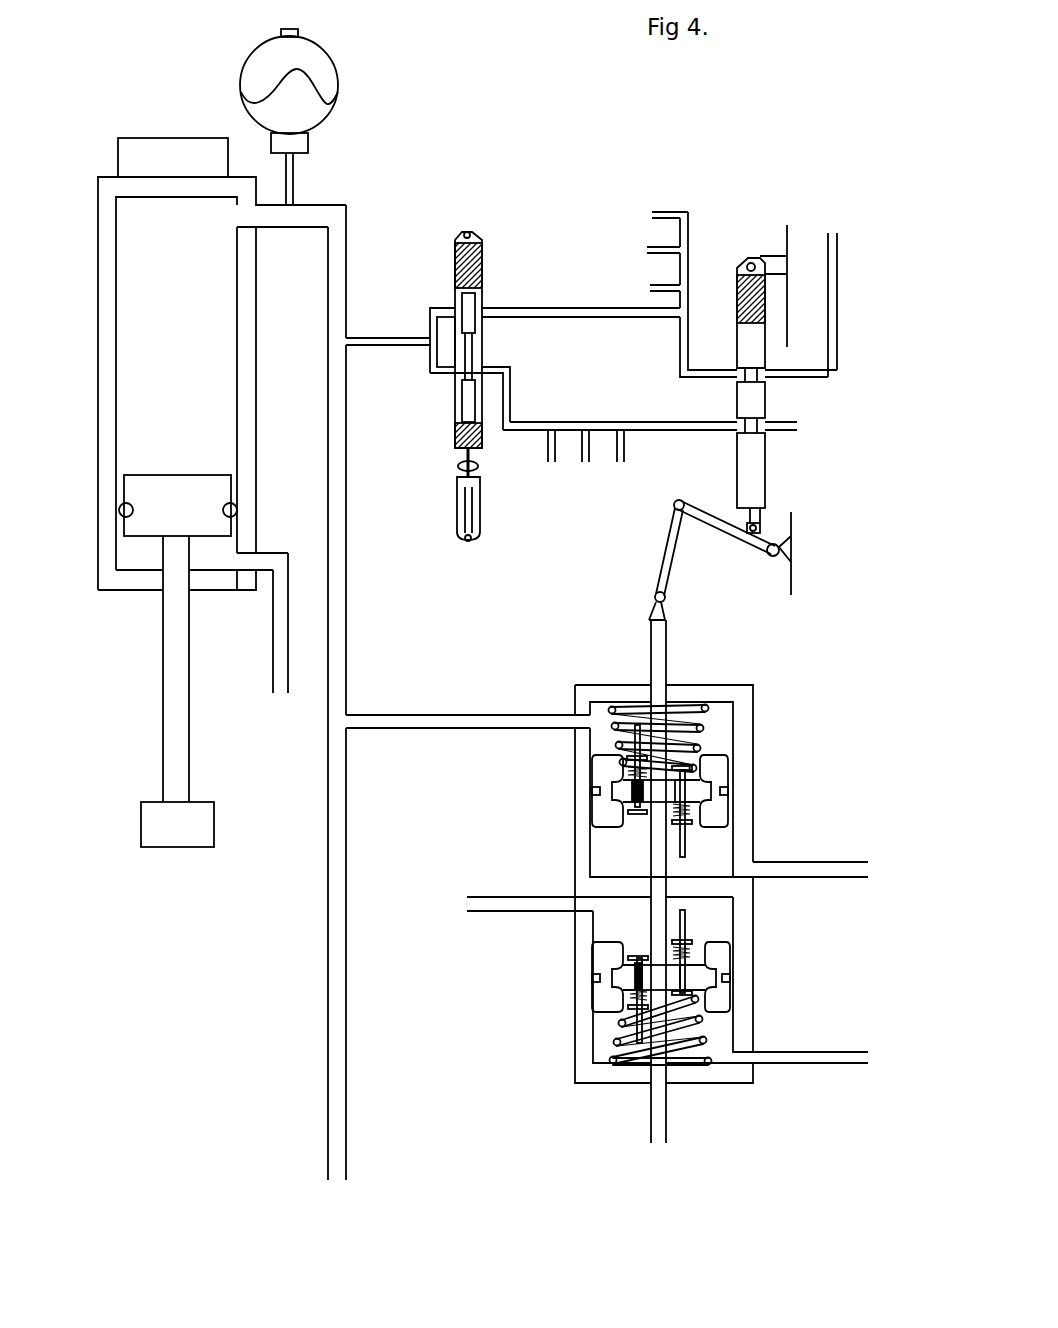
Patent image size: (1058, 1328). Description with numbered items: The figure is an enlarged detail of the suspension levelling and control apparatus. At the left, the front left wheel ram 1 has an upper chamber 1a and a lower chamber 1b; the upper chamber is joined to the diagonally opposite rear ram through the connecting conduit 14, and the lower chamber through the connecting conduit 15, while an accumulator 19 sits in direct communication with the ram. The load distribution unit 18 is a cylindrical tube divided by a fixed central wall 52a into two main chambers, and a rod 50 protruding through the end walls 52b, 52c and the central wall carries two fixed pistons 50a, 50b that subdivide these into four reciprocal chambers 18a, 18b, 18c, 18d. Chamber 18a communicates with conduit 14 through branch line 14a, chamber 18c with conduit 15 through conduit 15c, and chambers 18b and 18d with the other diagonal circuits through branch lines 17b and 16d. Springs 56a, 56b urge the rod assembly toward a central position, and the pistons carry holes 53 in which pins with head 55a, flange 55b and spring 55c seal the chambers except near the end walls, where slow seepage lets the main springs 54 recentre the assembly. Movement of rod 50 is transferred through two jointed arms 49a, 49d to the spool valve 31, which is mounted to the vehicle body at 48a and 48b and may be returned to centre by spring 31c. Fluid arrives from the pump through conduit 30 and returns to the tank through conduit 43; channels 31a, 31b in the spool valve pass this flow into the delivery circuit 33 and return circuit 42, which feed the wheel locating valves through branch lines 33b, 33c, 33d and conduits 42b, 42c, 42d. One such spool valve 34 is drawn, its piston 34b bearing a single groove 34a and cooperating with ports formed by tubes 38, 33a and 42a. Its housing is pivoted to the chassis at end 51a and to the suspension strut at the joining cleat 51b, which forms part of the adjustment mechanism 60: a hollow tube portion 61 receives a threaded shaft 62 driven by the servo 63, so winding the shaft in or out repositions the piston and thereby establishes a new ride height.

The front left wheel ram 1 is at (108, 175).
The upper chamber 1a is at (137, 287).
The lower chamber 1b is at (137, 558).
The connecting conduit 14 is at (317, 202).
The branch line 14a is at (447, 713).
The connecting conduit 15 is at (271, 652).
The conduit 15c is at (467, 902).
The branch line 16d is at (805, 1067).
The branch line 17b is at (836, 877).
The load distribution unit 18 is at (770, 672).
The internal chamber 18a is at (725, 711).
The internal chamber 18b is at (720, 848).
The internal chamber 18c is at (737, 900).
The internal chamber 18d is at (733, 1043).
The accumulator 19 is at (330, 62).
The conduit 30 is at (838, 277).
The spool valve 31 is at (830, 408).
The channel 31a is at (765, 380).
The channel 31b is at (765, 433).
The spring 31c is at (735, 298).
The delivery circuit 33 is at (678, 363).
The tube 33a is at (550, 307).
The conduit branch line 33b is at (640, 283).
The conduit branch line 33c is at (640, 243).
The conduit branch line 33d is at (652, 212).
The spool valve 34 is at (455, 402).
The elongated groove 34a is at (455, 353).
The spool valve piston 34b is at (456, 292).
The tube 38 is at (379, 337).
The return circuit 42 is at (717, 420).
The tube 42a is at (510, 390).
The conduit 42b is at (553, 463).
The conduit 42c is at (585, 462).
The conduit 42d is at (618, 462).
The conduit 43 is at (800, 427).
The mounting 48a is at (777, 250).
The mounting 48b is at (797, 555).
The jointed arm 49a is at (662, 555).
The jointed arm 49d is at (725, 535).
The rod 50 is at (665, 672).
The piston 50a is at (720, 765).
The piston 50b is at (725, 1002).
The housing end 51a is at (467, 230).
The joining cleat 51b is at (468, 542).
The central wall 52a is at (582, 885).
The end wall 52b is at (580, 682).
The end wall 52c is at (717, 1085).
The hole 53 is at (628, 975).
The main spring 54 is at (632, 733).
The pin head 55a is at (647, 958).
The flange 55b is at (693, 818).
The spring 55c is at (623, 995).
The spring 56a is at (703, 727).
The spring 56b is at (623, 1065).
The adjustment mechanism 60 is at (450, 519).
The hollow tube portion 61 is at (463, 503).
The threaded shaft 62 is at (465, 453).
The servo 63 is at (477, 463).